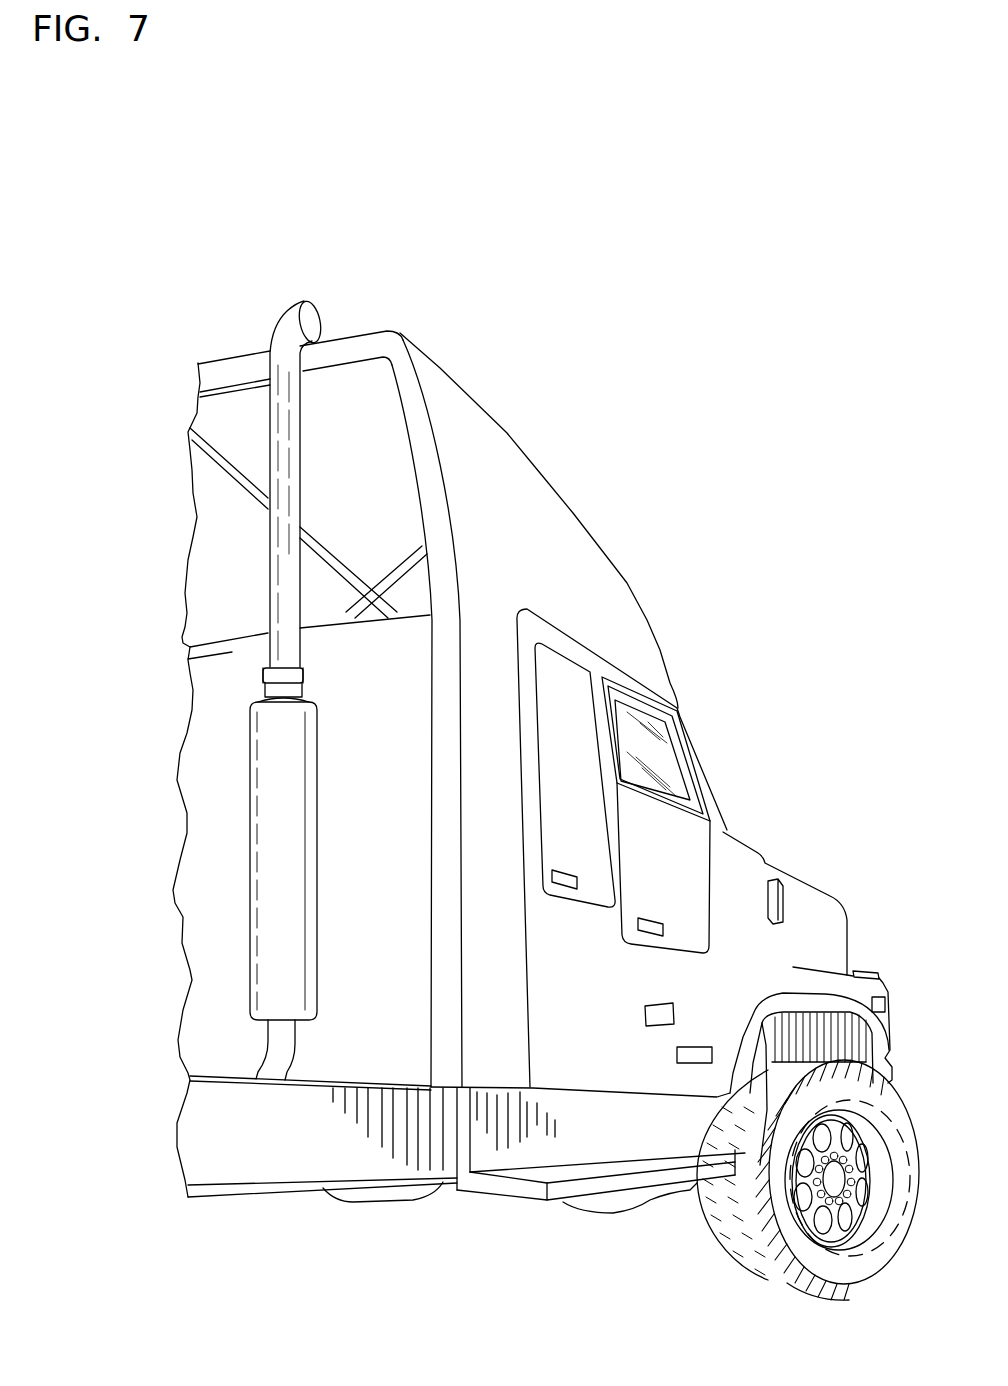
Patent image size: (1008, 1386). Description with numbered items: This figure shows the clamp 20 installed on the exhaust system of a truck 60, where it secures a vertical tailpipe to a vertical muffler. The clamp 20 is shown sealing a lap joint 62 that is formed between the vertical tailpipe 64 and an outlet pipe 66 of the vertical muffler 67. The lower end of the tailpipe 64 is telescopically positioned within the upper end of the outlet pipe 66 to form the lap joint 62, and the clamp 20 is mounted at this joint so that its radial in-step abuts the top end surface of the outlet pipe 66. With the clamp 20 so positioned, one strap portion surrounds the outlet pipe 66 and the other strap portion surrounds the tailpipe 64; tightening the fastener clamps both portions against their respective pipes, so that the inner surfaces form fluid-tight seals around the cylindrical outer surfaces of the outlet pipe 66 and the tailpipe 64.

The clamp 20 is at (250, 675).
The truck 60 is at (747, 836).
The lap joint 62 is at (320, 661).
The vertical tailpipe 64 is at (270, 571).
The outlet pipe 66 is at (305, 690).
The vertical muffler 67 is at (317, 851).